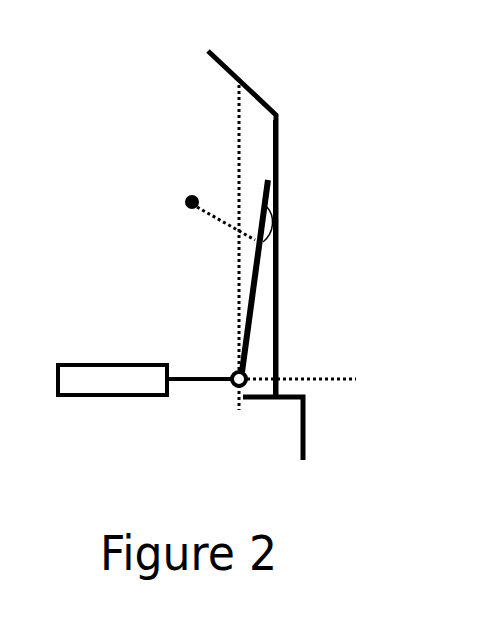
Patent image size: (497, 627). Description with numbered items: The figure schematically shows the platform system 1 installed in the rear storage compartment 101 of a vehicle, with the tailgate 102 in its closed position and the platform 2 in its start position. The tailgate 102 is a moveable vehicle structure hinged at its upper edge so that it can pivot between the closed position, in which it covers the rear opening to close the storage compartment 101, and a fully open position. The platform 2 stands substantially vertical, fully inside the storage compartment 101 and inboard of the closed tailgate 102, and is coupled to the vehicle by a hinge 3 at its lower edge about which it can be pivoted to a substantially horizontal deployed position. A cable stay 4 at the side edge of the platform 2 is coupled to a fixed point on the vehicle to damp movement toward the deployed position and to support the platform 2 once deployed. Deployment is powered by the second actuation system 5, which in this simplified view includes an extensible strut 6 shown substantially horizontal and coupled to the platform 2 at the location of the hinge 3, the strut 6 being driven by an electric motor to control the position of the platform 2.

The platform system 1 is at (340, 97).
The storage compartment 101 is at (121, 166).
The tailgate 102 is at (278, 325).
The platform 2 is at (254, 279).
The hinge 3 is at (247, 375).
The cable stay 4 is at (213, 213).
The second actuation system 5 is at (193, 422).
The extensible strut 6 is at (90, 392).